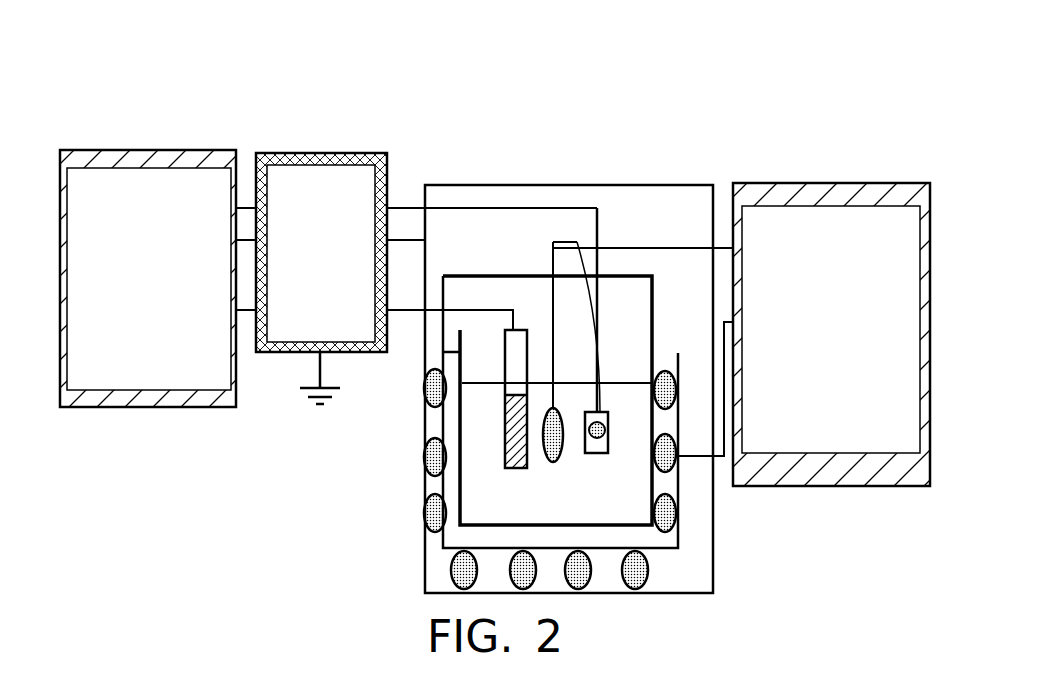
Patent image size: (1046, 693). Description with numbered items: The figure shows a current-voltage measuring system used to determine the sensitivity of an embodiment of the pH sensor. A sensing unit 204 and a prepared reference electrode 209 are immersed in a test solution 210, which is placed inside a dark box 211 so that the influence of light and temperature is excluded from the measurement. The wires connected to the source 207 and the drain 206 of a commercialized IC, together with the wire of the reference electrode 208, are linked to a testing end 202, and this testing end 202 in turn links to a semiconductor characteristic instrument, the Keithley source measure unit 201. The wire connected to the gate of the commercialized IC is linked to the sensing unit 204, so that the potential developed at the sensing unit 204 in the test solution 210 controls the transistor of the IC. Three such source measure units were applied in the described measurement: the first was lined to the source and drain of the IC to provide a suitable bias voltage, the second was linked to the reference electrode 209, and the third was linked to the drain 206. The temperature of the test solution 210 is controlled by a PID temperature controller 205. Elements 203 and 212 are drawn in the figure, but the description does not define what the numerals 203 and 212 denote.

The Keithley 236 source measure unit 201 is at (178, 291).
The testing end 202 is at (347, 270).
The reference electrode 203 is at (550, 408).
The sensing unit 204 is at (601, 412).
The PID temperature controller 205 is at (852, 337).
The drain 206 is at (395, 207).
The source 207 is at (405, 238).
The reference electrode wire 208 is at (405, 311).
The reference electrode 209 is at (505, 430).
The test solution 210 is at (574, 510).
The dark box 211 is at (425, 546).
The heaters 212 is at (650, 568).